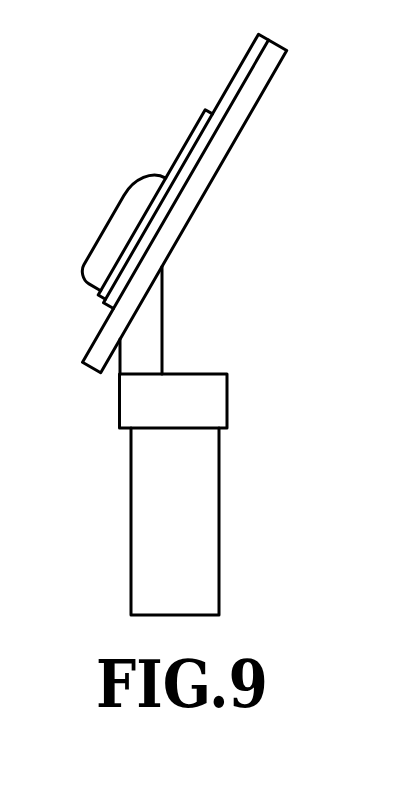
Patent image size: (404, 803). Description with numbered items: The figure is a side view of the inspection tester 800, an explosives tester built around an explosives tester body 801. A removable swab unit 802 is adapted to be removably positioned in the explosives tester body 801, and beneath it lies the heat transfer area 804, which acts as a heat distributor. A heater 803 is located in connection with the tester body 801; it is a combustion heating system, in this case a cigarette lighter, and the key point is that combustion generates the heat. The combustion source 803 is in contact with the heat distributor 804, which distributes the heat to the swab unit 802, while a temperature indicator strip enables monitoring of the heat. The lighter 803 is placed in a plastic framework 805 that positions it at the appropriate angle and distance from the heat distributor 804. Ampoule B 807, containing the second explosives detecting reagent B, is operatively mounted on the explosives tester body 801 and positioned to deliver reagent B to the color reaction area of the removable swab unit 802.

The inspection tester 800 is at (268, 260).
The explosives tester body 801 is at (207, 206).
The removable swab unit 802 is at (151, 195).
The heater 803 is at (231, 521).
The heat transfer area 804 is at (186, 171).
The plastic framework 805 is at (226, 394).
The ampoule B 807 is at (112, 208).